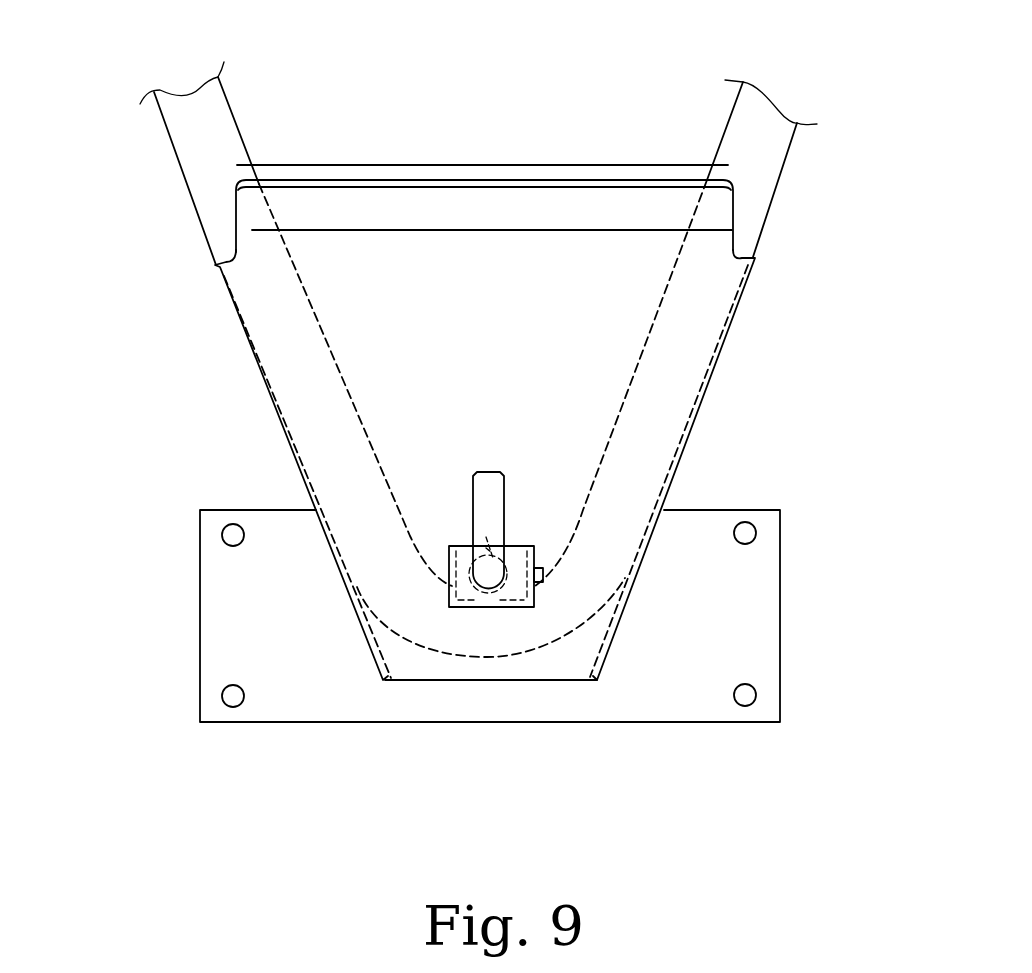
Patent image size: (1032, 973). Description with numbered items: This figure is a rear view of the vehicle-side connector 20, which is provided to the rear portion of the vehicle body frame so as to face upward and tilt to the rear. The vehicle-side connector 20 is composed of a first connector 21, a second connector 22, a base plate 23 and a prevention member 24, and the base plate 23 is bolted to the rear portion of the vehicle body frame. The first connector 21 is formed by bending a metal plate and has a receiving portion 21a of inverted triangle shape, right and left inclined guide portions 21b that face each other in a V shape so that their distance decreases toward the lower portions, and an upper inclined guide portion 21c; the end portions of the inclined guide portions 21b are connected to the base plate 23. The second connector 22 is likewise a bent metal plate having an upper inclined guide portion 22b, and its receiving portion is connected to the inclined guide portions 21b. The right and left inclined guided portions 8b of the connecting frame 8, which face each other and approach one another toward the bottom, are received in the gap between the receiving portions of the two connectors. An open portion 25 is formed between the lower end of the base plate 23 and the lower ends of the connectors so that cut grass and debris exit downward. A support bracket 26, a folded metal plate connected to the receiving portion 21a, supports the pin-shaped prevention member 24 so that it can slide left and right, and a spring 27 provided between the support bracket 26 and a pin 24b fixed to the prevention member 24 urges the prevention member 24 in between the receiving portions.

The connecting frame 8 is at (481, 324).
The inclined guided portions 8b is at (200, 147).
The vehicle-side connector 20 is at (262, 385).
The first connector 21 is at (477, 377).
The receiving portion 21a is at (615, 310).
The inclined guide portions 21b is at (240, 333).
The upper inclined guide portion 21c is at (375, 202).
The second connector 22 is at (484, 145).
The upper inclined guide portion 22b is at (575, 160).
The base plate 23 is at (230, 612).
The prevention member 24 is at (490, 478).
The pin 24b is at (545, 576).
The open portion 25 is at (490, 681).
The support bracket 26 is at (512, 608).
The spring 27 is at (485, 528).